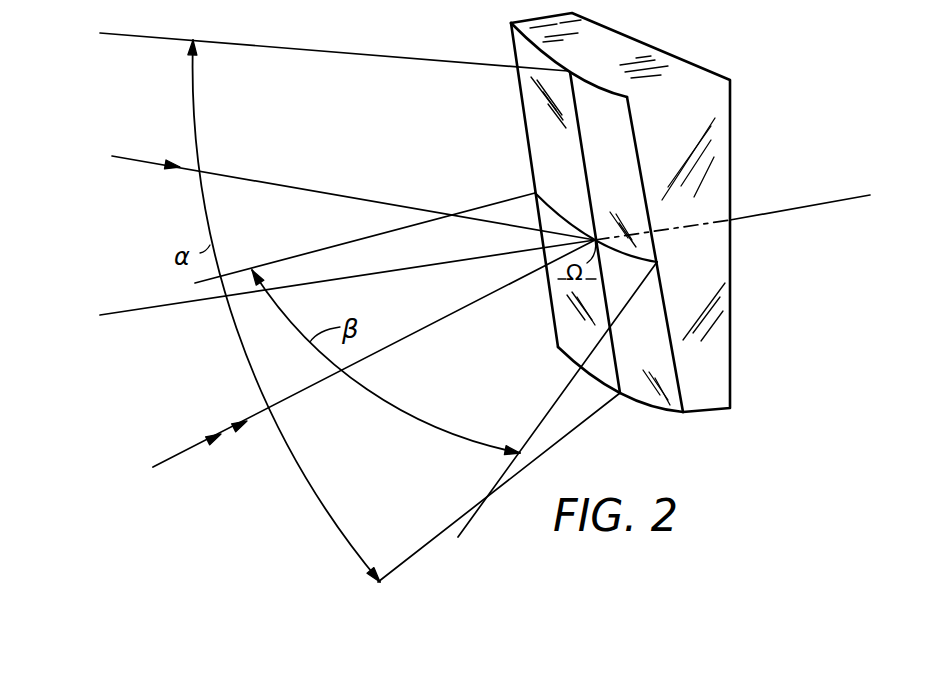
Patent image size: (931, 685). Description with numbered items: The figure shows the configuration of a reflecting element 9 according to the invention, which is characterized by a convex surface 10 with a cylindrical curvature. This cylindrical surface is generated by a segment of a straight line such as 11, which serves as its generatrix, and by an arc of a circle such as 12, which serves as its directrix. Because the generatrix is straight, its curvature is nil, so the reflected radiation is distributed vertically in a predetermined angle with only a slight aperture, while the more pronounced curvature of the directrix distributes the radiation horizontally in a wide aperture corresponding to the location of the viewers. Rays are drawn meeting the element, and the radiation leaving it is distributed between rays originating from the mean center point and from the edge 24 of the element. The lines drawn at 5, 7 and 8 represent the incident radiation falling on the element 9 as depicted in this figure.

The incident light beam 5 is at (140, 312).
The light beam 7 is at (232, 173).
The light beam 8 is at (185, 452).
The reflecting element 9 is at (708, 348).
The convex surface 10 is at (655, 397).
The segment of a straight line 11 is at (595, 203).
The arc of a circle 12 is at (558, 210).
The edge 24 is at (597, 68).